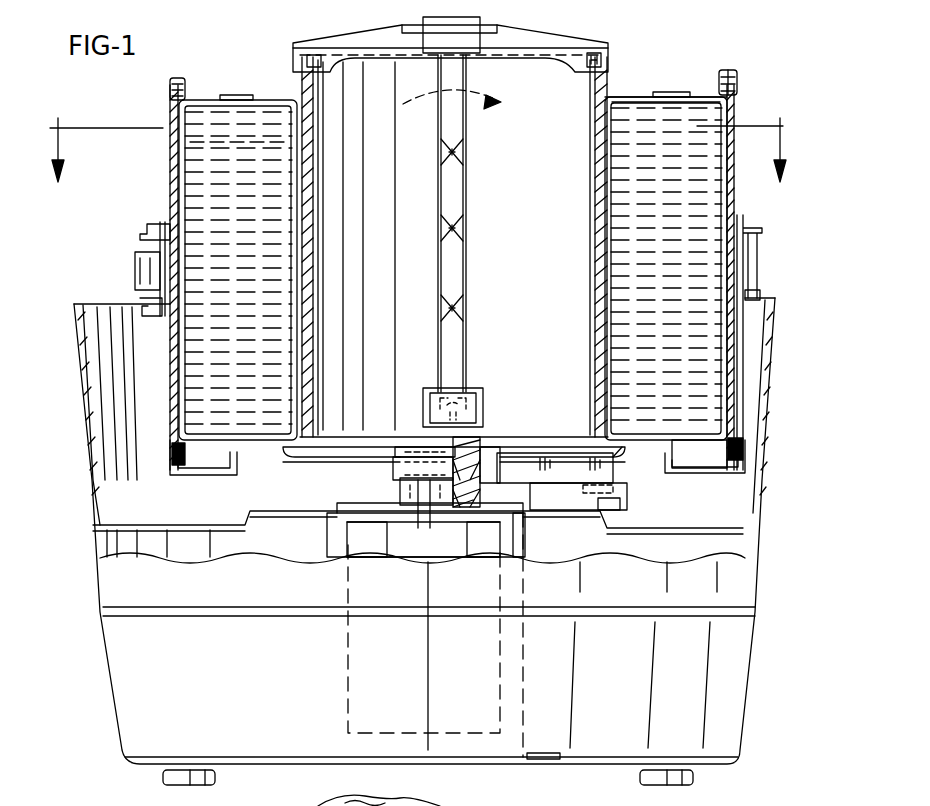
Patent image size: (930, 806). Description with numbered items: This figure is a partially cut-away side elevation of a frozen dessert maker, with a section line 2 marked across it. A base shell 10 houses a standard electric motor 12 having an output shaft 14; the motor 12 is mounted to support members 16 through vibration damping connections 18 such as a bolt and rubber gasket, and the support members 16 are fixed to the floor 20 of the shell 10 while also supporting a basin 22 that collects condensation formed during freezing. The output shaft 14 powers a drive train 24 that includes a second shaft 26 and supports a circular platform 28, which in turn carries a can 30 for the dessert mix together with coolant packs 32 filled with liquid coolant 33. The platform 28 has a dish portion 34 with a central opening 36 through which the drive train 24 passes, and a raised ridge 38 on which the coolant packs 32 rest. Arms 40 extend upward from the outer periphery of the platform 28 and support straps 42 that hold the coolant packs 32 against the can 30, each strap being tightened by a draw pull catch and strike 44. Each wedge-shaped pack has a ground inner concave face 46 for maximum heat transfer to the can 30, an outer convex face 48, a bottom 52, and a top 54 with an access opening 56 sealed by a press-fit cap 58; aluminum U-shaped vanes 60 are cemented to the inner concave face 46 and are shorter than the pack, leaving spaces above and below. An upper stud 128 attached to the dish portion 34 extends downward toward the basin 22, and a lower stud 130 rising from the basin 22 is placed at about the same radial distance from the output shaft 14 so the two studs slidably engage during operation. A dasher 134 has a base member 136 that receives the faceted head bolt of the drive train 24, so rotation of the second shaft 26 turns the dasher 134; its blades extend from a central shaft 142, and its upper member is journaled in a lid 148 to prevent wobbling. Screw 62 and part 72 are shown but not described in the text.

The section line 2- 2 is at (418, 136).
The base shell 10 is at (97, 527).
The electric motor 12 is at (385, 558).
The output shaft 14 is at (428, 518).
The support members 16 is at (525, 545).
The vibration damping connections 18 is at (377, 518).
The floor 20 is at (283, 766).
The basin 22 is at (288, 508).
The drive train 24 is at (388, 468).
The second shaft 26 is at (474, 446).
The platform 28 is at (290, 445).
The can 30 is at (597, 350).
The coolant packs 32 is at (190, 168).
The liquid coolant 33 is at (192, 120).
The dish portion 34 is at (507, 453).
The central opening 36 is at (418, 448).
The raised ridge 38 is at (637, 440).
The arms 40 is at (170, 400).
The straps 42 is at (168, 222).
The draw pull catch and strike 44 is at (140, 272).
The inner concave face 46 is at (598, 218).
The outer convex face 48 is at (180, 145).
The bottom 52 is at (712, 437).
The top 54 is at (623, 96).
The access opening 56 is at (670, 98).
The press-fit cap 58 is at (677, 92).
The vanes 60 is at (267, 142).
The screw 62 is at (181, 78).
The bushing 72 is at (357, 505).
The upper stud 128 is at (608, 472).
The lower stud 130 is at (613, 507).
The dasher 134 is at (455, 200).
The base member 136 is at (481, 394).
The central shaft 142 is at (452, 275).
The lid 148 is at (557, 42).